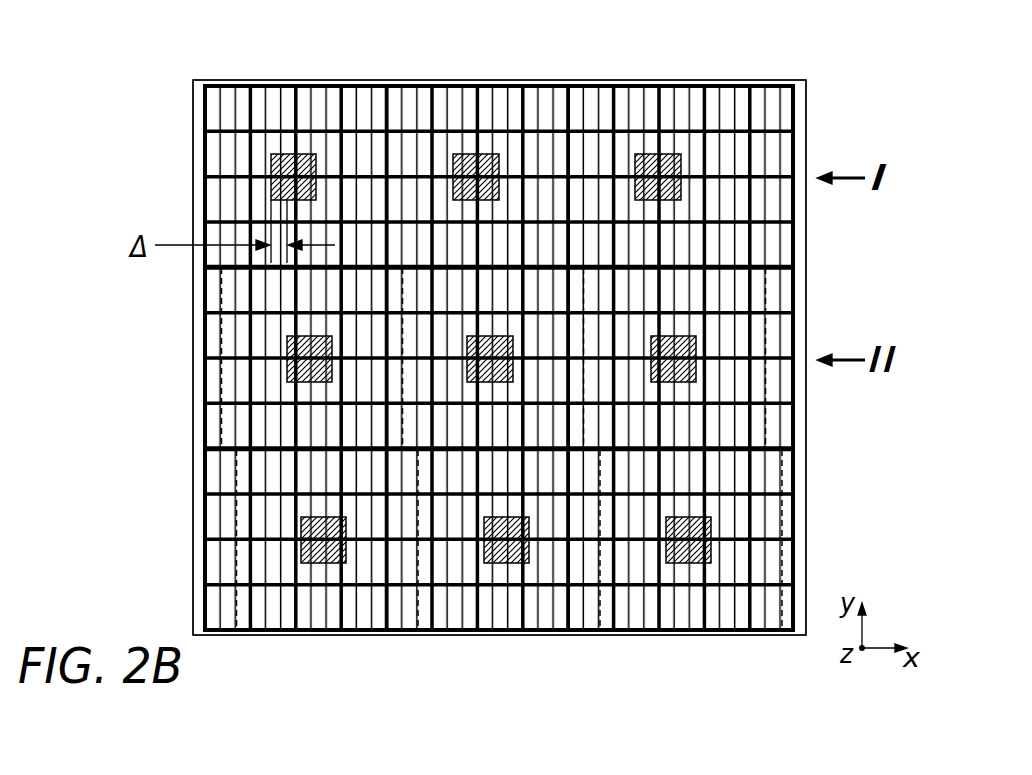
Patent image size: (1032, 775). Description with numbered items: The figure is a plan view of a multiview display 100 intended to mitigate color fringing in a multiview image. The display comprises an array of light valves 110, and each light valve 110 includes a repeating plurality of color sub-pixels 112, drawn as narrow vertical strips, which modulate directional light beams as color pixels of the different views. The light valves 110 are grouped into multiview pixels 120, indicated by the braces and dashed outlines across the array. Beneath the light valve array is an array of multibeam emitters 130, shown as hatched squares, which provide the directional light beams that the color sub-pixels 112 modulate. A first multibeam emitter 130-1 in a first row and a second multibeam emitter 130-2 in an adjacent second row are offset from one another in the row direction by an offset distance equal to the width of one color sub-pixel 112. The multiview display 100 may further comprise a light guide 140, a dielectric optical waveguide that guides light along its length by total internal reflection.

The multiview display 100 is at (794, 43).
The light valve 110 is at (606, 78).
The color sub-pixel 112 is at (212, 100).
The multiview pixel 120 is at (567, 72).
The multibeam emitter 130 is at (367, 314).
The first multibeam emitter 130-1 is at (252, 168).
The second multibeam emitter 130-2 is at (262, 347).
The light guide 140 is at (805, 492).